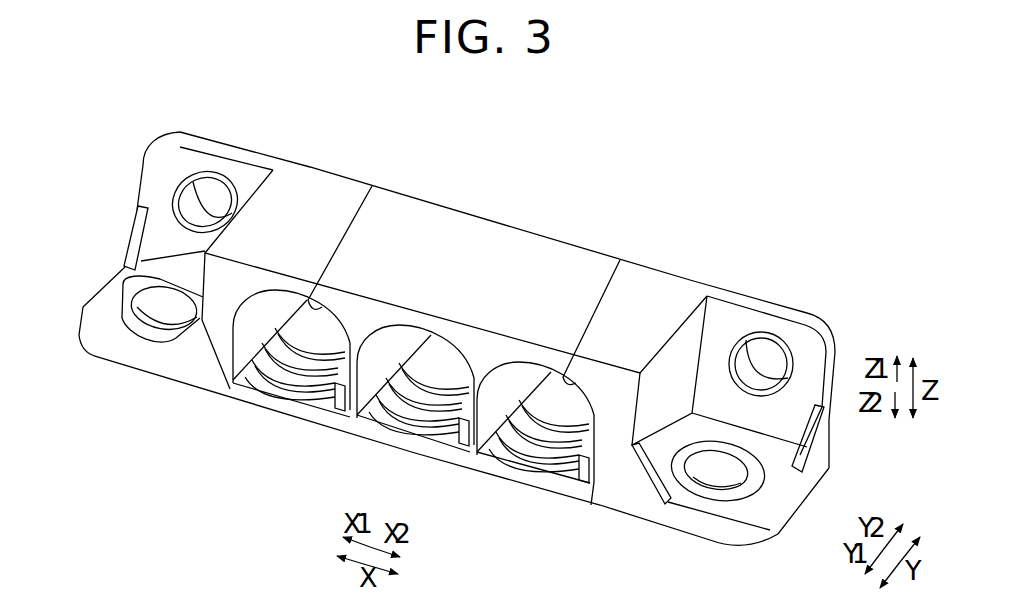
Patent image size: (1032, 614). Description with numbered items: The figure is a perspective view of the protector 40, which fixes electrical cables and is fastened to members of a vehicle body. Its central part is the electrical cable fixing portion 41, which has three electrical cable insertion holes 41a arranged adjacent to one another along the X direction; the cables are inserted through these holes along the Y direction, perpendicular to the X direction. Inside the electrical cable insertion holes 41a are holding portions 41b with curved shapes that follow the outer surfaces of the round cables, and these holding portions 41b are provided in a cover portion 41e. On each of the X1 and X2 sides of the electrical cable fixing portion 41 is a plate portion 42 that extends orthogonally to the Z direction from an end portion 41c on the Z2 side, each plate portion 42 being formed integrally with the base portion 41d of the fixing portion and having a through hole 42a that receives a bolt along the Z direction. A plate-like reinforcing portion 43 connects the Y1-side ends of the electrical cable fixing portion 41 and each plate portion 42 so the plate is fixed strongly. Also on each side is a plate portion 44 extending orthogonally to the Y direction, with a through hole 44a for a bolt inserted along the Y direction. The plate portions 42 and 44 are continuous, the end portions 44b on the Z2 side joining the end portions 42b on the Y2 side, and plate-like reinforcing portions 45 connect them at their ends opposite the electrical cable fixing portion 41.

The protector 40 is at (96, 67).
The electrical cable fixing portion 41 is at (487, 236).
The electrical cable insertion holes 41a is at (374, 183).
The holding portions 41b is at (288, 387).
The end portion 41c is at (192, 375).
The base portion 41d is at (412, 198).
The cover portion 41e is at (437, 453).
The plate portions 42 is at (110, 338).
The through hole 42a is at (135, 316).
The end portions 42b is at (140, 265).
The reinforcing portion 43 is at (187, 343).
The plate portions 44 is at (170, 160).
The through hole 44a is at (222, 192).
The end portions 44b is at (170, 260).
The reinforcing portions 45 is at (127, 250).